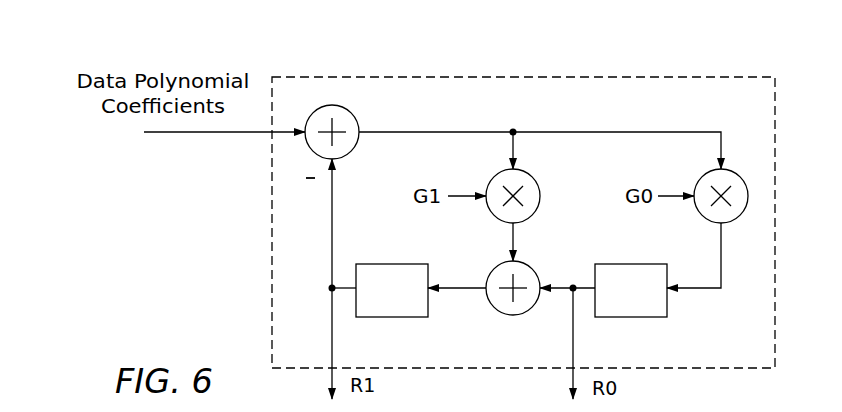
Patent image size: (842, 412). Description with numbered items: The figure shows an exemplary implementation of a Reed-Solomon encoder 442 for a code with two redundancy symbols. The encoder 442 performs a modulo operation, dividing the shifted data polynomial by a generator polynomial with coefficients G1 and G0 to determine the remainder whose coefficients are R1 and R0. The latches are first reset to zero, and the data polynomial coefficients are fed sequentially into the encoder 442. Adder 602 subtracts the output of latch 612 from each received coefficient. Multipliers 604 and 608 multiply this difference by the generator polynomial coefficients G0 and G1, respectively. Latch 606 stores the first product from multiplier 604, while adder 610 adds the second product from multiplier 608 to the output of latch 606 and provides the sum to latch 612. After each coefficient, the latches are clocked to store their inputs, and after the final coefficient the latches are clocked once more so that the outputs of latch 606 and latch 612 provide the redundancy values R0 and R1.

The encoder 442 is at (523, 222).
The adder 602 is at (350, 150).
The multiplier 604 is at (702, 215).
The latch 606 is at (630, 317).
The multiplier 608 is at (532, 215).
The adder 610 is at (504, 313).
The latch 612 is at (390, 317).